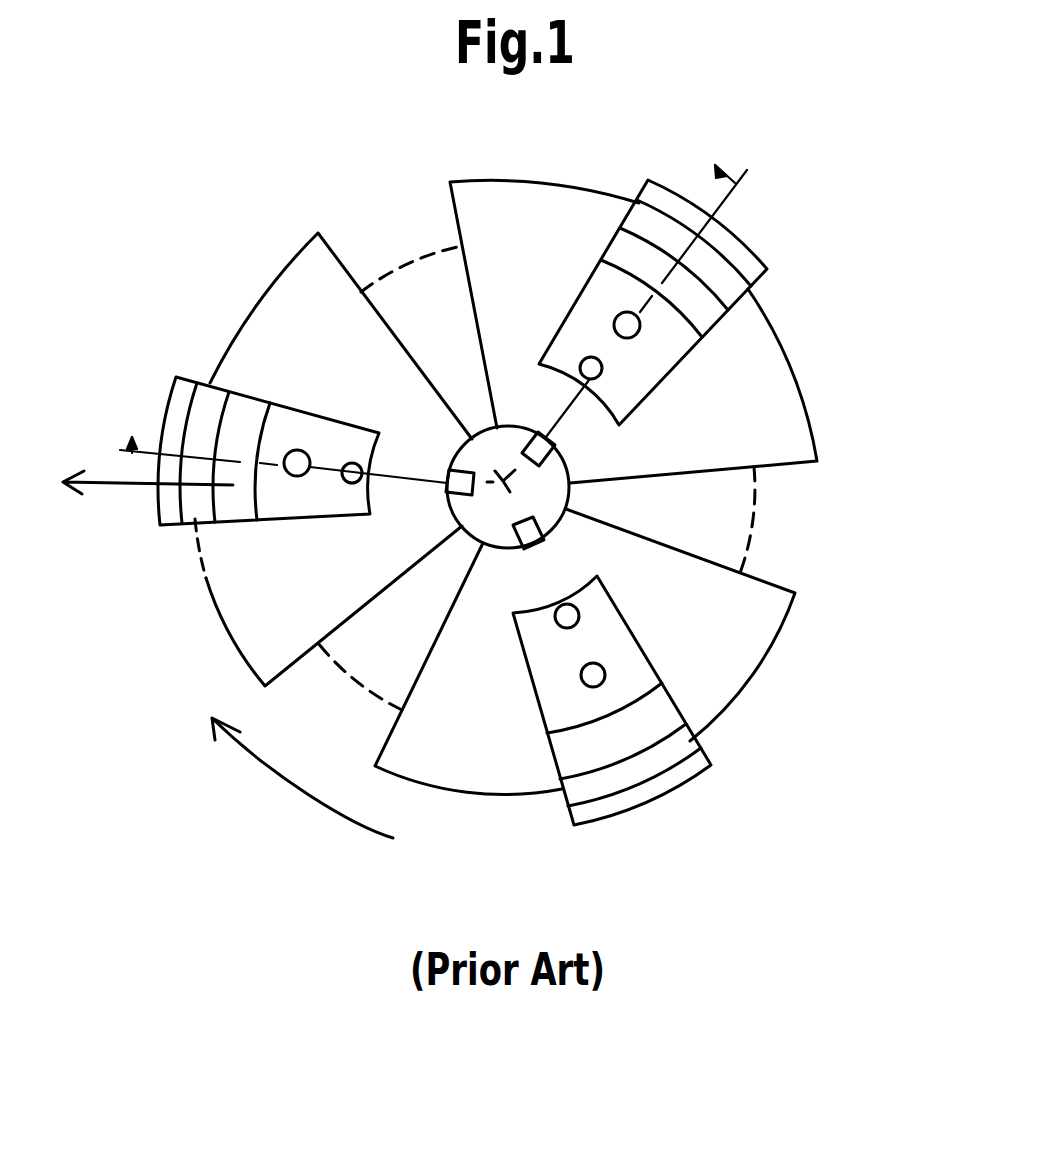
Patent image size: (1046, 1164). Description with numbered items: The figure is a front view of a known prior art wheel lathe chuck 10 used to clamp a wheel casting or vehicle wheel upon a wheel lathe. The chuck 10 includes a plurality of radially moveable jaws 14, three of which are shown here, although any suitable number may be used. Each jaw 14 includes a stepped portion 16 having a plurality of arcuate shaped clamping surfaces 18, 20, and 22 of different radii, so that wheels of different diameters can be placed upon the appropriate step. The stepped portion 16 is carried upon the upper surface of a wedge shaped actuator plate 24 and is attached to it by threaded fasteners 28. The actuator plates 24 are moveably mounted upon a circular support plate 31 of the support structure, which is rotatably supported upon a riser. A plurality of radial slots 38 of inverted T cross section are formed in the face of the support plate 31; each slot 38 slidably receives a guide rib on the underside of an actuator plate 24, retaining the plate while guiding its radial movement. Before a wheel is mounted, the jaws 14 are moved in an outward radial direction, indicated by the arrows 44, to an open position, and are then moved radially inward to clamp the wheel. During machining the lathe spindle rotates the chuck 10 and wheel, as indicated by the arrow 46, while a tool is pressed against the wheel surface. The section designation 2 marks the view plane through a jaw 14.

The wheel lathe chuck 10 is at (340, 165).
The jaw 14 is at (472, 512).
The stepped portion 16 is at (178, 393).
The clamping surface 18 is at (295, 520).
The clamping surface 20 is at (240, 522).
The clamping surface 22 is at (200, 522).
The actuator plate 24 is at (257, 302).
The threaded fasteners 28 is at (350, 463).
The support plate 31 is at (754, 518).
The radial slots 38 is at (512, 530).
The arrows 44 is at (148, 497).
The arrow 46 is at (302, 778).
The section line 2 is at (422, 309).